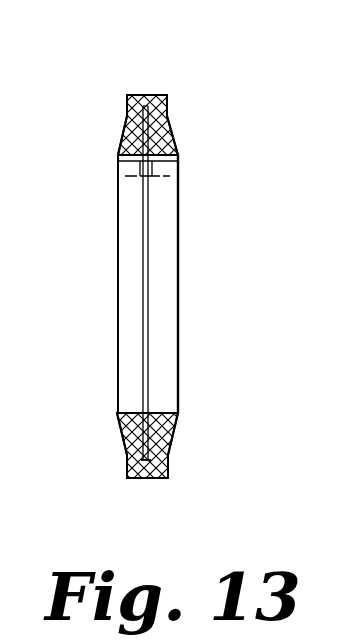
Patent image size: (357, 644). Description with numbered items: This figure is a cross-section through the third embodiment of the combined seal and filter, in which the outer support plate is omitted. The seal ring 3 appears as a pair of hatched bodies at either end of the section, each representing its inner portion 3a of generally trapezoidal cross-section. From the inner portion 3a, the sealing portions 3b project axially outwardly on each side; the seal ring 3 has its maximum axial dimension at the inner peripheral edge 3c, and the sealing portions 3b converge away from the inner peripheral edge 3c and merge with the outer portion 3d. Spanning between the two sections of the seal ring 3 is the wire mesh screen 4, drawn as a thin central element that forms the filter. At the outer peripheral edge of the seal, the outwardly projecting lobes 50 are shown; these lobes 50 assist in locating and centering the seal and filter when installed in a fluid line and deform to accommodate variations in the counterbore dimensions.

The seal ring 3 is at (180, 365).
The inner portion 3a is at (186, 432).
The sealing portions 3b is at (122, 140).
The inner peripheral edge 3c is at (135, 172).
The outer portion 3d is at (167, 110).
The wire mesh screen 4 is at (150, 318).
The lobes 50 is at (150, 97).